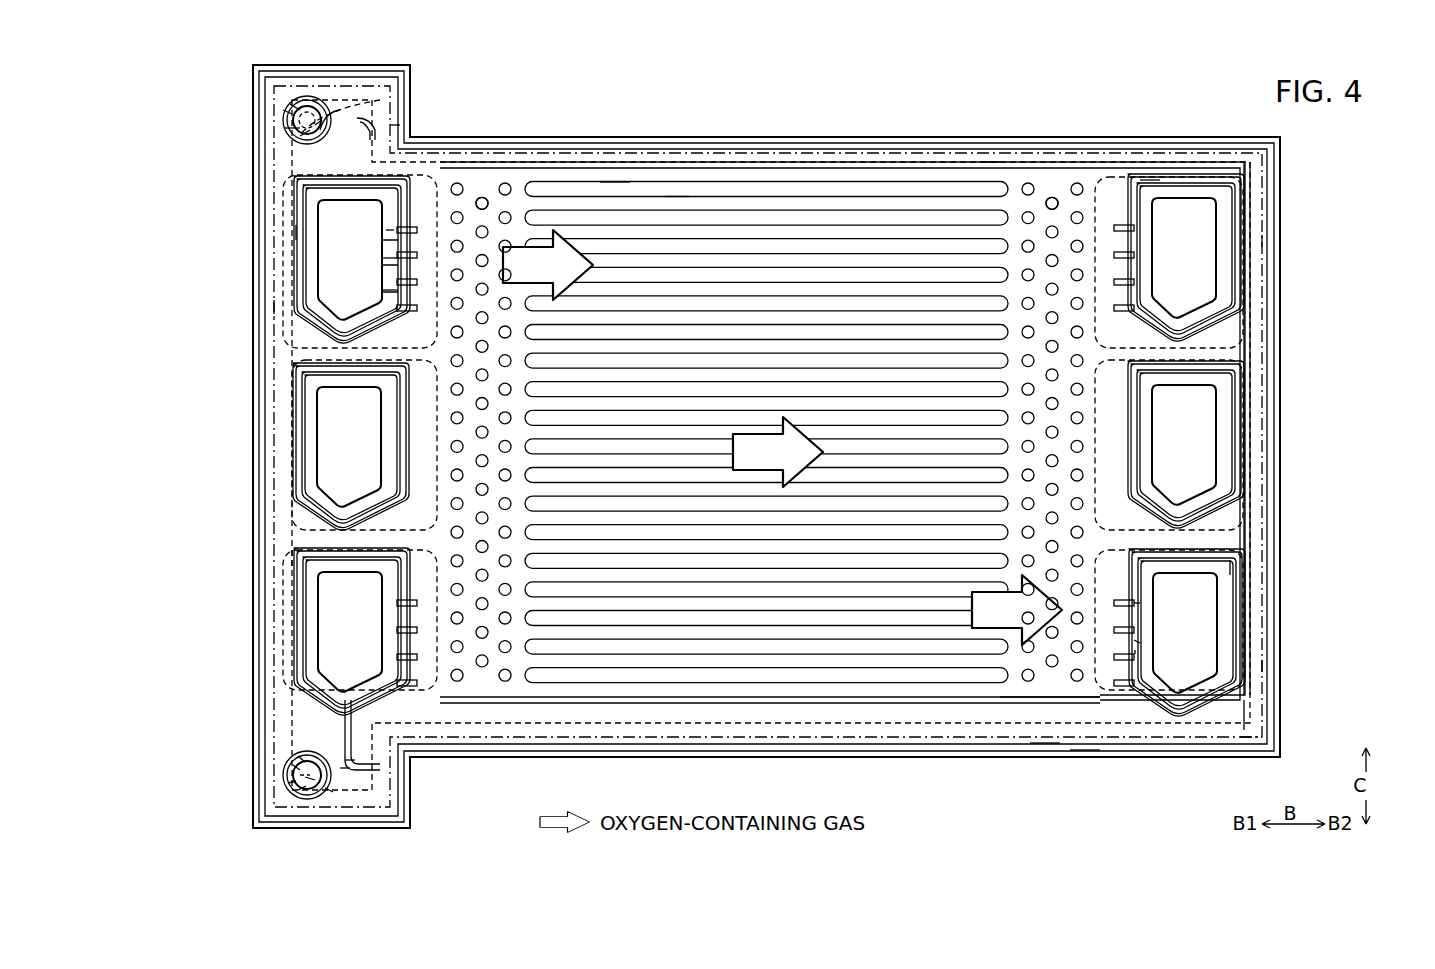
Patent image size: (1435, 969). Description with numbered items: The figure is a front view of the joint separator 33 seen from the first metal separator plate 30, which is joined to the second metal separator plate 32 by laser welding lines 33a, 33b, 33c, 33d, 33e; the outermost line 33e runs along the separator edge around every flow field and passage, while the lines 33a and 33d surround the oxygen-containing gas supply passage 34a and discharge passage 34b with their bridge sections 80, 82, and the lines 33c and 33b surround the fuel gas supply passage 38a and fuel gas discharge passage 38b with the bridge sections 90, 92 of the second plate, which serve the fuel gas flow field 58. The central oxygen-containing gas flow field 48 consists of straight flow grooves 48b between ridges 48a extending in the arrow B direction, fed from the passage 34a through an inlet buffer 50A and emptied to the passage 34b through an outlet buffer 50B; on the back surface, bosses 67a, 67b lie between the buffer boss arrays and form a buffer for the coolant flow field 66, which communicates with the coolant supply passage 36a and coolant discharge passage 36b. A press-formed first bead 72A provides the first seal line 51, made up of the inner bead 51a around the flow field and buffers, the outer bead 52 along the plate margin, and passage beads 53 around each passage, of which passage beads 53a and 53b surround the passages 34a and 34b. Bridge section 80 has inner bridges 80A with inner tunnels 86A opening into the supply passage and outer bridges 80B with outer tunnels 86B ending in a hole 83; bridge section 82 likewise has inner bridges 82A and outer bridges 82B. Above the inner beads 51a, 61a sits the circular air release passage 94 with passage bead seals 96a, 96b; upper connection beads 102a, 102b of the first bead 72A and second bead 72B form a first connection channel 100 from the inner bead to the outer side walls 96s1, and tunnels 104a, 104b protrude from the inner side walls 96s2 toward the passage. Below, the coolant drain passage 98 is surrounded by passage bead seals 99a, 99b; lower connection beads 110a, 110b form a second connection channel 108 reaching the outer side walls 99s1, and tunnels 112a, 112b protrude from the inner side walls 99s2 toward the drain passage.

The first metal separator plate 30 is at (856, 180).
The second metal separator plate 32 is at (912, 180).
The joint separator 33 is at (1212, 98).
The laser welding line 33a is at (275, 310).
The laser welding line 33b is at (292, 562).
The laser welding line 33c is at (1262, 243).
The laser welding line 33d is at (1262, 665).
The laser welding line 33e is at (990, 160).
The oxygen-containing gas supply passage 34a is at (345, 245).
The oxygen-containing gas discharge passage 34b is at (1160, 660).
The coolant supply passage 36a is at (335, 420).
The coolant discharge passage 36b is at (1205, 432).
The fuel gas supply passage 38a is at (1200, 230).
The fuel gas discharge passage 38b is at (335, 597).
The oxygen-containing gas flow field 48 is at (815, 100).
The ridges 48a is at (732, 215).
The straight flow grooves 48b is at (796, 205).
The inlet buffer 50A is at (505, 589).
The outlet buffer 50B is at (1033, 503).
The first seal line 51 is at (944, 745).
The inner bead 51a is at (975, 704).
The outer bead 52 is at (916, 740).
The passage beads 53 is at (1228, 205).
The passage bead 53a is at (300, 232).
The passage bead 53b is at (1228, 575).
The fuel gas flow field 58 is at (613, 205).
The inner bead 61a is at (972, 700).
The coolant flow field 66 is at (677, 205).
The bosses 67a is at (486, 200).
The bosses 67b is at (1052, 197).
The first bead 72A is at (1040, 745).
The second bead 72B is at (1085, 752).
The bridge section 80 is at (370, 268).
The inner bridges 80A is at (392, 262).
The outer bridges 80B is at (395, 295).
The bridge section 82 is at (1128, 705).
The inner bridges 82A is at (1145, 640).
The outer bridges 82B is at (1128, 603).
The hole 83 is at (415, 300).
The inner tunnel 86A is at (395, 232).
The outer tunnel 86B is at (405, 228).
The bridge section 90 is at (1124, 208).
The bridge section 92 is at (418, 663).
The air release passage 94 is at (293, 120).
The passage bead seal 96a is at (290, 106).
The passage bead seal 96b is at (285, 112).
The outer side walls 96s1 is at (320, 125).
The inner side walls 96s2 is at (305, 136).
The coolant drain passage 98 is at (293, 775).
The passage bead seal 99a is at (300, 790).
The passage bead seal 99b is at (290, 783).
The outer side walls 99s1 is at (300, 757).
The inner side walls 99s2 is at (295, 766).
The first connection channel 100 is at (355, 118).
The upper connection bead 102a is at (350, 110).
The upper connection bead 102b is at (400, 128).
The tunnel 104a is at (388, 98).
The tunnel 104b is at (290, 128).
The second connection channel 108 is at (310, 778).
The lower connection bead 110a is at (345, 768).
The lower connection bead 110b is at (350, 758).
The tunnel 112a is at (330, 790).
The tunnel 112b is at (300, 775).